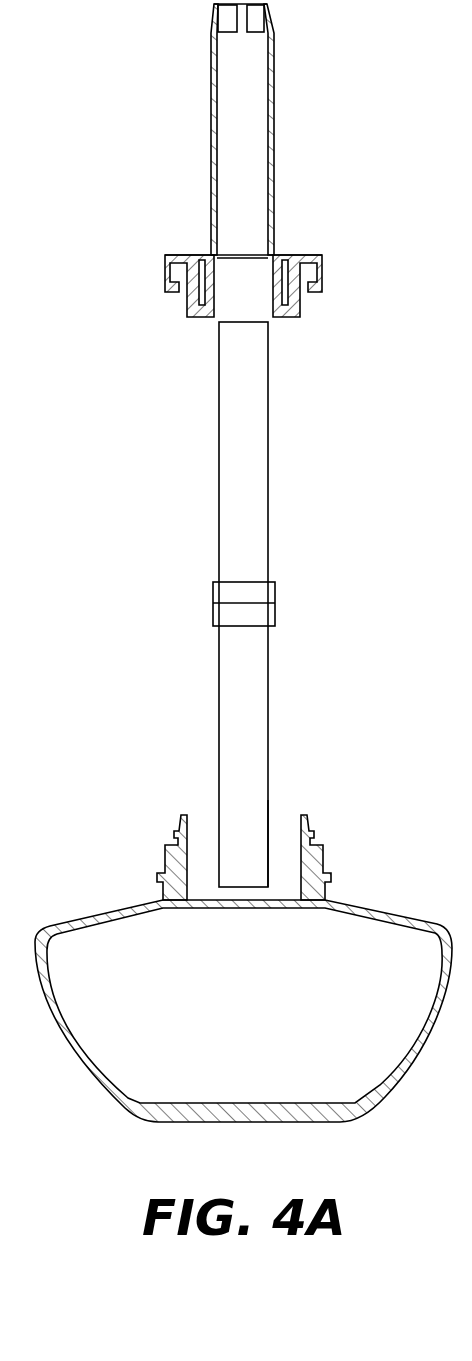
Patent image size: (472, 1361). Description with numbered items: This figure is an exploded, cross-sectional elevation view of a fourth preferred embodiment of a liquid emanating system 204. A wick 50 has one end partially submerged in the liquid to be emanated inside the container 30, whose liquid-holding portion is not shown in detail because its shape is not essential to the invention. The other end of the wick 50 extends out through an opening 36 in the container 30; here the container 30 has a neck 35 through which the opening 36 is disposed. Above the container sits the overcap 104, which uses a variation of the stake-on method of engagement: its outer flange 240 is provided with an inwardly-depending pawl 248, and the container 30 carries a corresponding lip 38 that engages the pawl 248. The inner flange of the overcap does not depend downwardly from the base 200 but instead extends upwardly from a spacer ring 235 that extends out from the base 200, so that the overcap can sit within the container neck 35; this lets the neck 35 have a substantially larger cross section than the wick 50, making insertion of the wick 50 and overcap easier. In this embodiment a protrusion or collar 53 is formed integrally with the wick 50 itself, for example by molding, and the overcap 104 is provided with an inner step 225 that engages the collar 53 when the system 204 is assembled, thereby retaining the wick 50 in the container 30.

The overcap 104 is at (297, 112).
The base 200 is at (276, 287).
The inner step 225 is at (207, 253).
The spacer ring 235 is at (200, 319).
The outer flange 240 is at (323, 255).
The pawl 248 is at (323, 272).
The system 204 is at (215, 604).
The wick 50 is at (268, 455).
The collar 53 is at (213, 596).
The container 30 is at (100, 908).
The neck 35 is at (185, 880).
The lip 38 is at (313, 827).
The opening 36 is at (287, 847).